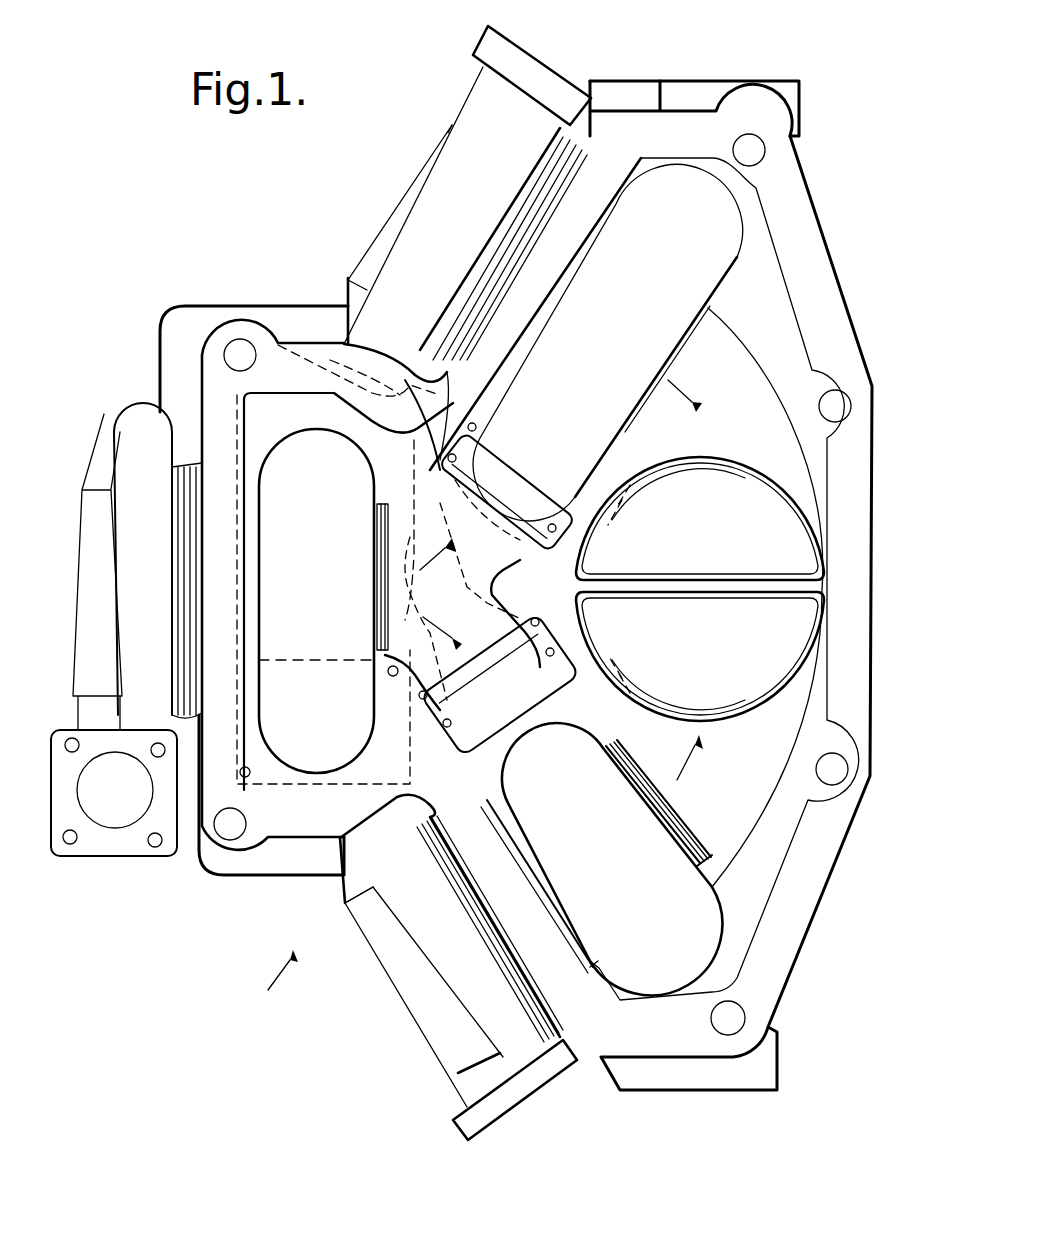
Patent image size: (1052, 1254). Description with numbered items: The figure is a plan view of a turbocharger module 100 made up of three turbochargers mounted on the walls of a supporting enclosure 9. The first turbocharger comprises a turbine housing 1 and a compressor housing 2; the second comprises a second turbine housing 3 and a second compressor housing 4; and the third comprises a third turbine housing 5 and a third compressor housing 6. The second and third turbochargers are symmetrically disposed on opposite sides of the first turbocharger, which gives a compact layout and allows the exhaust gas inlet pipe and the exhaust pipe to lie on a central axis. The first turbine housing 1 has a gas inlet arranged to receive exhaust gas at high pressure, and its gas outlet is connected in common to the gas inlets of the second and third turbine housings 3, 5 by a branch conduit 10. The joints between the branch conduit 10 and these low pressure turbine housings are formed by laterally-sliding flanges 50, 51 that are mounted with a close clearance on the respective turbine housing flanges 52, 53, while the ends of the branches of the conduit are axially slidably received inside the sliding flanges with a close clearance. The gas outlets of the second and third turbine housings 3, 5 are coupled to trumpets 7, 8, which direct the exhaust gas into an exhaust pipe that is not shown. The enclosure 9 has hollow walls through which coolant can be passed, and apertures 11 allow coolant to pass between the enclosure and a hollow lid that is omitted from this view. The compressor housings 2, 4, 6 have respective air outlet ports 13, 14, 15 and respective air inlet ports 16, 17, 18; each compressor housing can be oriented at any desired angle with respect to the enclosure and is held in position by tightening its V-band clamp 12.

The turbine housing 1 is at (268, 855).
The compressor housing 2 is at (112, 435).
The second turbine housing 3 is at (725, 250).
The second compressor housing 4 is at (455, 133).
The third turbine housing 5 is at (700, 925).
The third compressor housing 6 is at (455, 1048).
The trumpet 7 is at (750, 388).
The trumpet 8 is at (728, 800).
The supporting enclosure 9 is at (838, 300).
The branch conduit 10 is at (420, 525).
The apertures 11 is at (758, 143).
The V-band clamps 12 is at (585, 148).
The air outlet port 13 is at (110, 845).
The air outlet port 14 is at (518, 56).
The air outlet port 15 is at (538, 1088).
The air inlet port 16 is at (80, 582).
The air inlet port 17 is at (398, 210).
The air inlet port 18 is at (408, 998).
The laterally-sliding flange 50 is at (450, 428).
The laterally-sliding flange 51 is at (420, 750).
The turbine housing flange 52 is at (443, 410).
The turbine housing flange 53 is at (455, 790).
The turbocharger module 100 is at (262, 989).